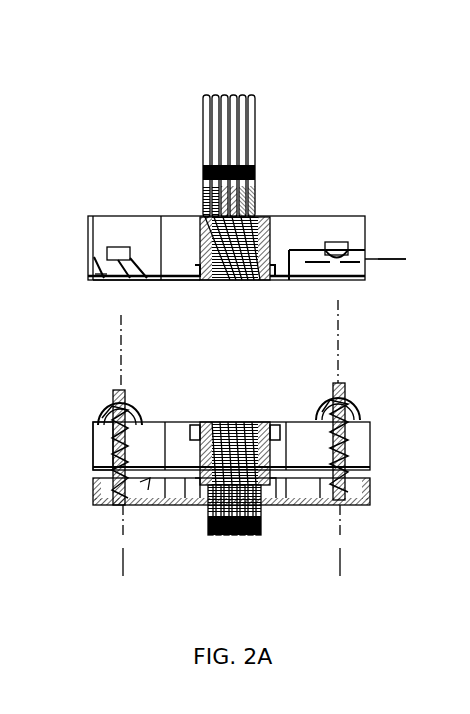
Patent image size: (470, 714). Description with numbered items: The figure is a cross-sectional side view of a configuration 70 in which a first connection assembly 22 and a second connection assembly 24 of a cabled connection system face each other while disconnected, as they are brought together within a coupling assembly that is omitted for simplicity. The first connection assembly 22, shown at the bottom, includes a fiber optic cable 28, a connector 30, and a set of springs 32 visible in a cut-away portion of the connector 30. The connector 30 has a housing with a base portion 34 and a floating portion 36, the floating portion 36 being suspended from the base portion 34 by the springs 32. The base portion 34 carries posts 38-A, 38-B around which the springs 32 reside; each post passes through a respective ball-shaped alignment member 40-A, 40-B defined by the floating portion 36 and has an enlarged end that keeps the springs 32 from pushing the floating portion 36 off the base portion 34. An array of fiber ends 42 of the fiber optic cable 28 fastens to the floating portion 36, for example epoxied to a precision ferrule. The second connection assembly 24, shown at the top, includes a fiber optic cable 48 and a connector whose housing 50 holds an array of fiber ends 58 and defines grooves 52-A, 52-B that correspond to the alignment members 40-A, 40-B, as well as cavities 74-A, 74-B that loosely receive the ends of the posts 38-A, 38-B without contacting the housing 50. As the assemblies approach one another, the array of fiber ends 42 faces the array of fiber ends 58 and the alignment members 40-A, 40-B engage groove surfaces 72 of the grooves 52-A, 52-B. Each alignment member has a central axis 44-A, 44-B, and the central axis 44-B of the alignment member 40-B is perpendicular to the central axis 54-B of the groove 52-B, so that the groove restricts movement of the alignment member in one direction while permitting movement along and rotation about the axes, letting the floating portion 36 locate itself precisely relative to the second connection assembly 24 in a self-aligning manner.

The configuration 70 is at (345, 86).
The second connection assembly 24 is at (132, 108).
The fiber optic cable 48 is at (262, 128).
The housing 50 is at (365, 222).
The array of fiber ends 58 is at (246, 292).
The cavity 74-A is at (115, 247).
The cavity 74-B is at (337, 242).
The groove 52-A is at (134, 285).
The groove 52-B is at (378, 258).
The central axis 54-B is at (392, 262).
The groove surface 72 is at (100, 281).
The first connection assembly 22 is at (436, 538).
The connector 30 is at (66, 512).
The springs 32 is at (95, 455).
The base portion 34 is at (372, 490).
The floating portion 36 is at (370, 446).
The array of fiber ends 42 is at (222, 422).
The fiber optic cable 28 is at (262, 530).
The alignment member 40-A is at (100, 405).
The alignment member 40-B is at (360, 410).
The post 38-A is at (126, 392).
The post 38-B is at (346, 386).
The central axis 44-A is at (123, 570).
The central axis 44-B is at (342, 570).